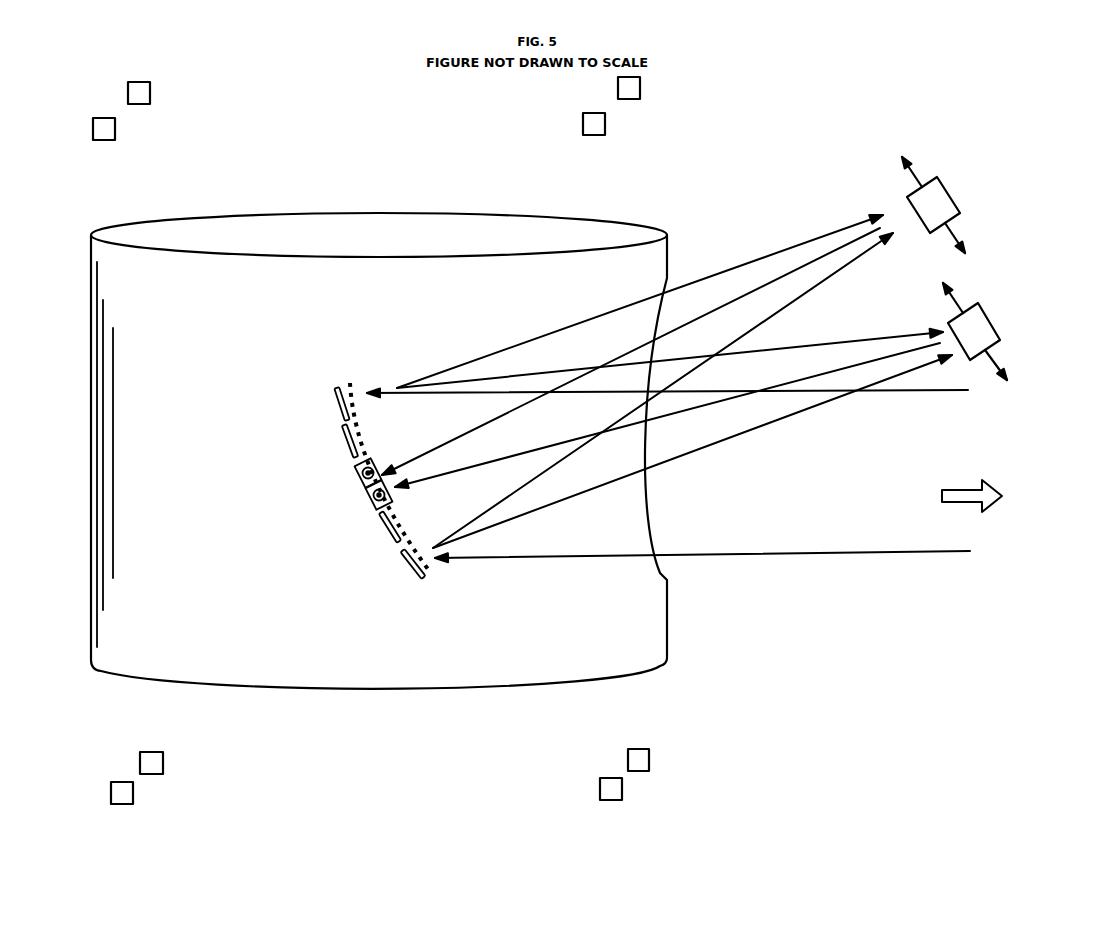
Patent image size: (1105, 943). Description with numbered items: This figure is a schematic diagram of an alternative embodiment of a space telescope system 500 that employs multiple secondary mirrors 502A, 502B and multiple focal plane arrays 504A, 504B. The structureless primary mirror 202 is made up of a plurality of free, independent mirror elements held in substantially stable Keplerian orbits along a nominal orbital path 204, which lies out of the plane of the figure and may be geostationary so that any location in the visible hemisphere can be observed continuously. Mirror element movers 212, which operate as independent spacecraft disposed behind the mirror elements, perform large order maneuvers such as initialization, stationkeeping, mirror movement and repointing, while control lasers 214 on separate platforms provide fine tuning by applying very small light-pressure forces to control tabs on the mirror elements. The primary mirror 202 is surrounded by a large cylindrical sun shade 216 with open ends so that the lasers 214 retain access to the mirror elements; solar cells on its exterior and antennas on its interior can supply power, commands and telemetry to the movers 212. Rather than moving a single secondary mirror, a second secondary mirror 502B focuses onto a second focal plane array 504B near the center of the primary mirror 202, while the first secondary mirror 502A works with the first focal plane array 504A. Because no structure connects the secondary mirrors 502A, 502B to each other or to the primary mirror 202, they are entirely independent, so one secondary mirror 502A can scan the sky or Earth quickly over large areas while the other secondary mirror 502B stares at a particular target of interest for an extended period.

The space telescope system 500 is at (793, 132).
The secondary mirror 502A is at (948, 187).
The second secondary mirror 502B is at (982, 300).
The structureless primary mirror 202 is at (348, 383).
The nominal orbital path 204 is at (372, 460).
The mirror element movers 212 is at (337, 412).
The control lasers 214 is at (632, 118).
The cylindrical sun shade 216 is at (116, 527).
The focal plane array 504A is at (355, 485).
The second focal plane array 504B is at (365, 503).